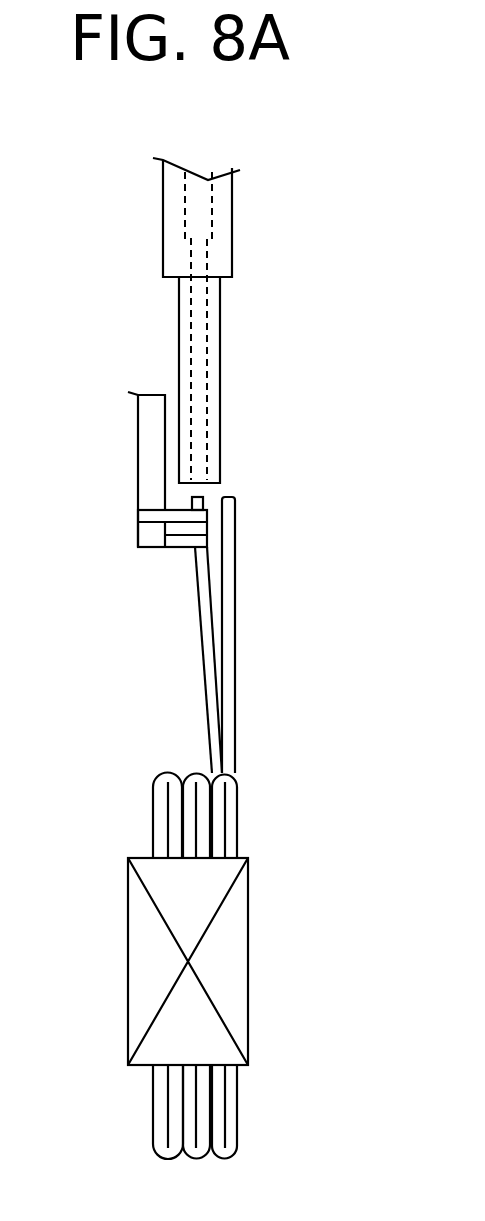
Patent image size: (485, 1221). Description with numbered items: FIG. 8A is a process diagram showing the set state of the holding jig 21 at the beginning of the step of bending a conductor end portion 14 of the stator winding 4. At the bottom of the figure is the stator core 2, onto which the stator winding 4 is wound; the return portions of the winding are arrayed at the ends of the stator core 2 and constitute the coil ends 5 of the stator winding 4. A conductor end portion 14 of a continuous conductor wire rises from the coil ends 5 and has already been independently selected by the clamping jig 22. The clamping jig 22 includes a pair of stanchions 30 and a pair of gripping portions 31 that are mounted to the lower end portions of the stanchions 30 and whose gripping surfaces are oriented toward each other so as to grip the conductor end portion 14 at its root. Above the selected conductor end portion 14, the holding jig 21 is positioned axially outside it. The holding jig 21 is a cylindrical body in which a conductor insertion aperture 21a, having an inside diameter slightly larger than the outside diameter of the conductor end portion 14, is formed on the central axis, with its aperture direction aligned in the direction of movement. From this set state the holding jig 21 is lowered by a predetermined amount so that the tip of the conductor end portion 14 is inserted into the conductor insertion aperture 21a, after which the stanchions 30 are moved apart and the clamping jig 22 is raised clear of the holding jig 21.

The stator core 2 is at (128, 955).
The stator winding 4 is at (192, 966).
The coil ends 5 is at (236, 814).
The conductor end portion 14 is at (207, 630).
The holding jig 21 is at (234, 287).
The conductor insertion aperture 21a is at (203, 363).
The clamping jig 22 is at (124, 461).
The stanchion 30 is at (146, 452).
The gripping portion 31 is at (178, 513).